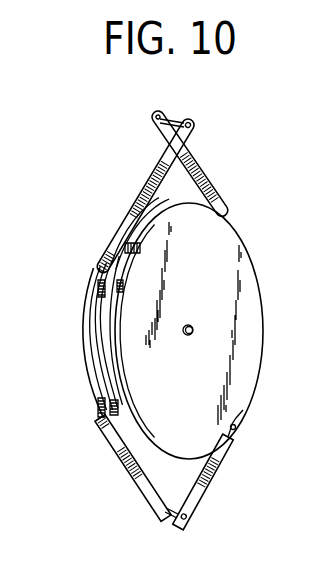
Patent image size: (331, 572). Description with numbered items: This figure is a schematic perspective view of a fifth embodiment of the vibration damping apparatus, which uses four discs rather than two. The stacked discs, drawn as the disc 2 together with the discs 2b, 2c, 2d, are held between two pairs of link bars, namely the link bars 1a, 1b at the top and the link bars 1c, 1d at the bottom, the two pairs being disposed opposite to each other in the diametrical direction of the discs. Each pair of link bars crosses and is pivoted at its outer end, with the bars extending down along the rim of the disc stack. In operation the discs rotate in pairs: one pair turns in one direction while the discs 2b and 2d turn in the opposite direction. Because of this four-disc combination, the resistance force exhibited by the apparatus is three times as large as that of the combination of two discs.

The link bar 1a is at (152, 176).
The link bar 1b is at (198, 178).
The link bar 1c is at (198, 493).
The link bar 1d is at (152, 487).
The disc 2 is at (112, 300).
The disc 2b is at (93, 323).
The disc 2c is at (102, 348).
The disc 2d is at (92, 380).